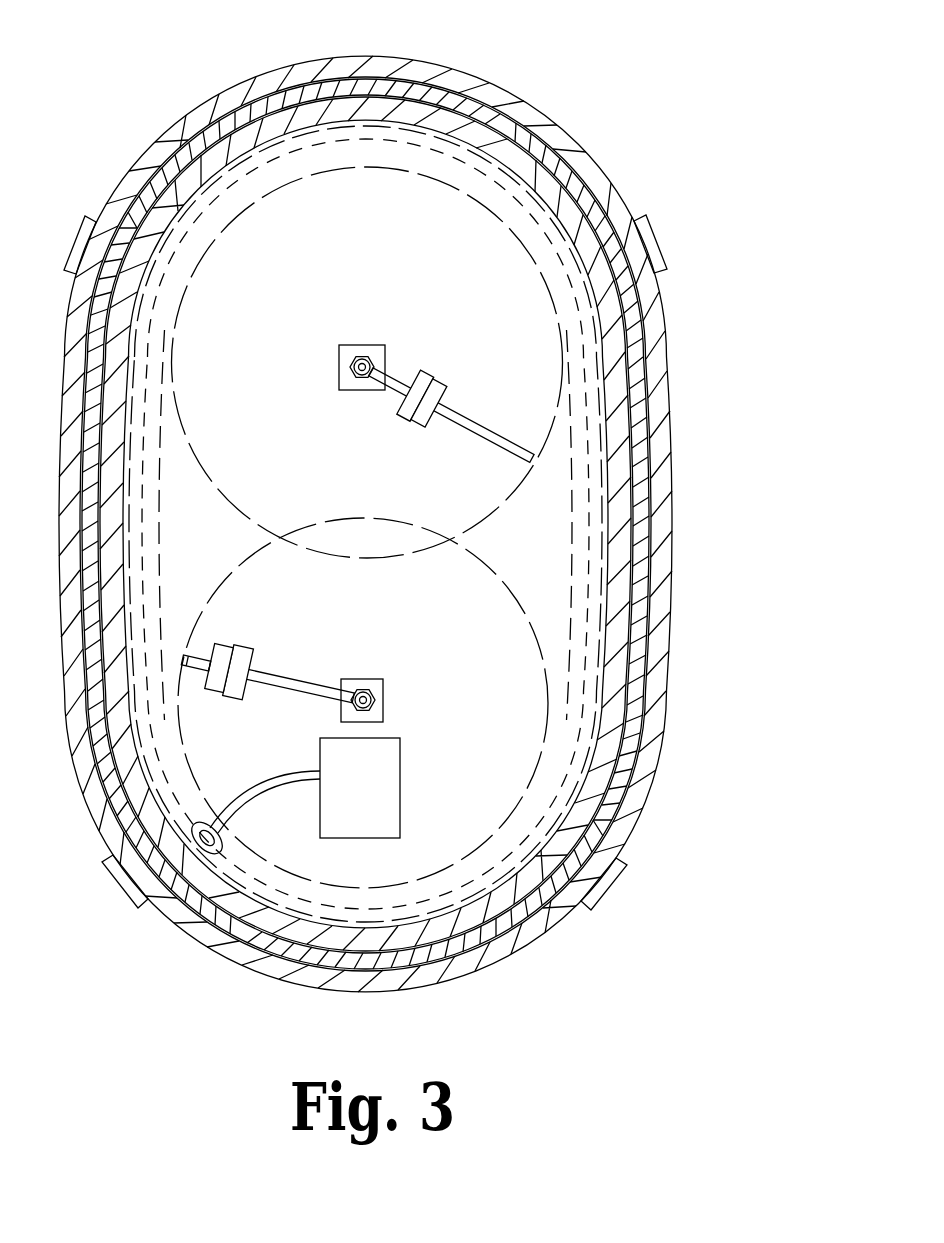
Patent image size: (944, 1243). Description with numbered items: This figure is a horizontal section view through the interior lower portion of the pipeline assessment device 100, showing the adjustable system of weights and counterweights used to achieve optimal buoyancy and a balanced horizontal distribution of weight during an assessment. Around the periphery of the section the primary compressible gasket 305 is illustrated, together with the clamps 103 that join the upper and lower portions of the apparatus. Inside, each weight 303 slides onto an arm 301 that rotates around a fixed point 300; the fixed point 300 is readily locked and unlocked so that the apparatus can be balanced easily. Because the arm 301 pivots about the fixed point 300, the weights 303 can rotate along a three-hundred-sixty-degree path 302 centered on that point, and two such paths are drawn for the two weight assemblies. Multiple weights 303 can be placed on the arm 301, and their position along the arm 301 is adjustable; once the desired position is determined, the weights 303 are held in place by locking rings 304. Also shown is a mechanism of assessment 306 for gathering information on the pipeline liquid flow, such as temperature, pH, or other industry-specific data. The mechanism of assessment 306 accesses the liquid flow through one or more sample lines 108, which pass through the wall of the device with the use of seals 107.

The pipeline assessment device 100 is at (555, 89).
The clamps 103 is at (643, 238).
The seals 107 is at (228, 840).
The sample lines 108 is at (275, 785).
The fixed point 300 is at (370, 694).
The arm 301 is at (502, 413).
The 360-degree path 302 is at (207, 468).
The weights 303 is at (432, 363).
The locking rings 304 is at (398, 418).
The primary compressible gasket 305 is at (588, 168).
The mechanism of assessment 306 is at (426, 779).